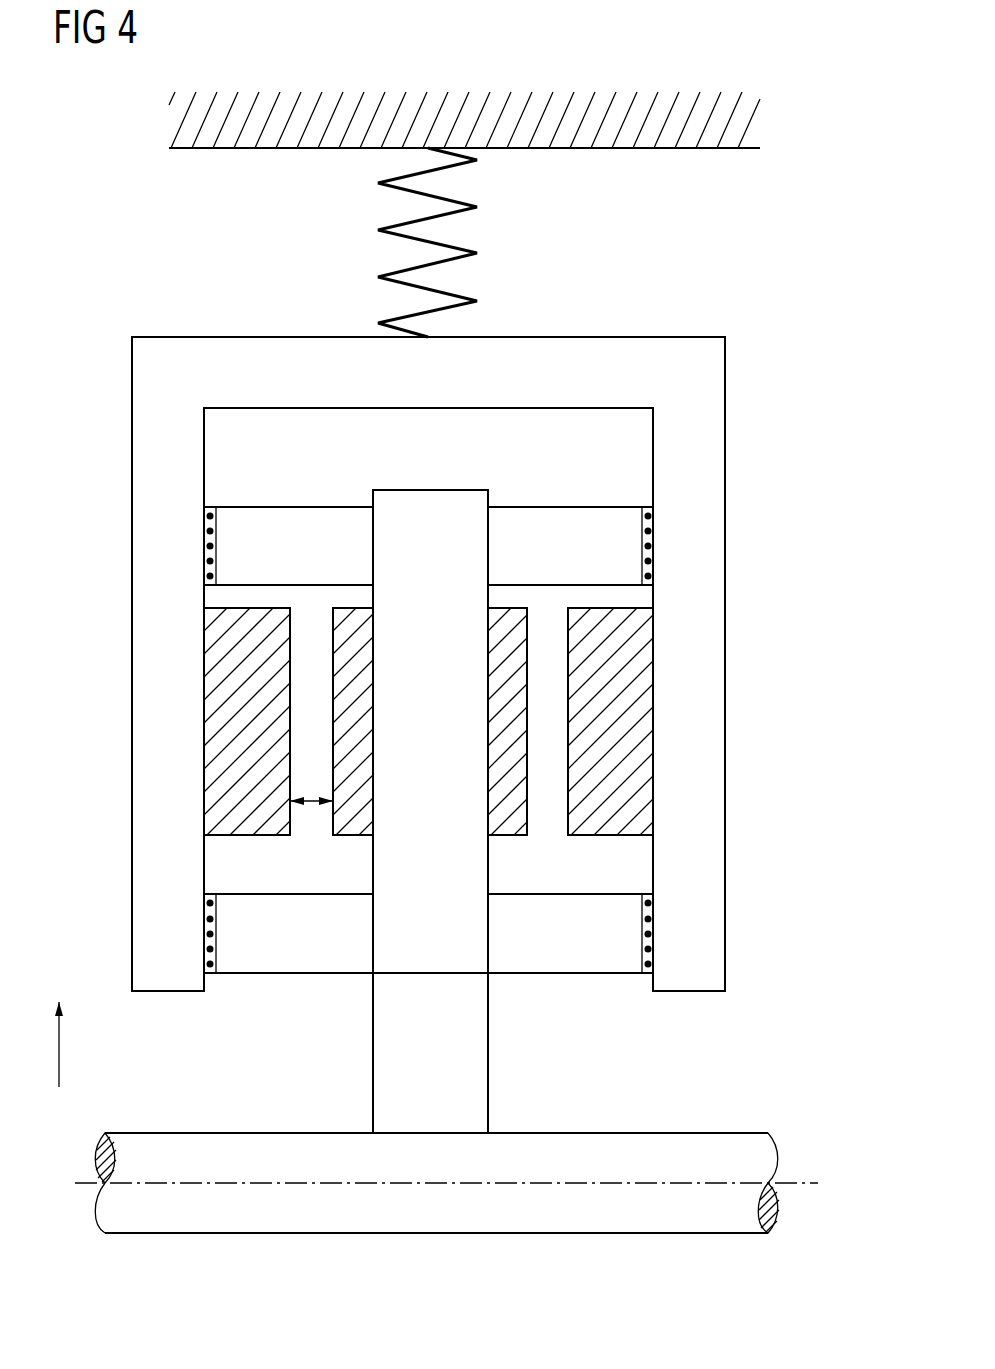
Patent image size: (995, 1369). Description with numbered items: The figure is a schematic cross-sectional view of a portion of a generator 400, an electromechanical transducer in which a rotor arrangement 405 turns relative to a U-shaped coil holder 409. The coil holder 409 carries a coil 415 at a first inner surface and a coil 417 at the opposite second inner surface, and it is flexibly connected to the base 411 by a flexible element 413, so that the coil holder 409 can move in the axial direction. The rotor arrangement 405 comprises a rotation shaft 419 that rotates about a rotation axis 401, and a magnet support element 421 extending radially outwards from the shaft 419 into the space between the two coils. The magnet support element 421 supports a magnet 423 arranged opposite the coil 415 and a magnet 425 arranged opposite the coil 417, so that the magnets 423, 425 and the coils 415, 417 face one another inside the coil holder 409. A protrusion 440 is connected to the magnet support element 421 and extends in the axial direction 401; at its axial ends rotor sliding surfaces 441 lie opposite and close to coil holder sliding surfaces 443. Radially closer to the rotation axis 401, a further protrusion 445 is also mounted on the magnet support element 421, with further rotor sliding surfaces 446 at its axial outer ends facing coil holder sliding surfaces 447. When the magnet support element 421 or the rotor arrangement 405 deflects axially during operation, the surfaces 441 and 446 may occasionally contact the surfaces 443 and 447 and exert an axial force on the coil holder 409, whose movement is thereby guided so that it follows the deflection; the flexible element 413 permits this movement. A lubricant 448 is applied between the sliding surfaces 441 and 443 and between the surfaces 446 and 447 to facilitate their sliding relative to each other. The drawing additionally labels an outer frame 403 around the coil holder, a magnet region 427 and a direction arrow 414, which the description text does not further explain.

The generator 400 is at (103, 326).
The rotation axis 401 is at (805, 1185).
The housing 403 is at (488, 636).
The rotor arrangement 405 is at (307, 1052).
The coil holder 409 is at (536, 348).
The fixed support 411 is at (263, 150).
The flexible element 413 is at (463, 237).
The direction of movement 414 is at (60, 1052).
The coil 415 is at (243, 820).
The coil 417 is at (612, 822).
The rotation shaft 419 is at (556, 1224).
The magnet support element 421 is at (477, 1043).
The magnet 423 is at (355, 820).
The magnet 425 is at (520, 822).
The magnet arrangement 427 is at (428, 712).
The protrusion 440 is at (308, 518).
The rotor sliding surfaces 441 is at (218, 560).
The coil holder sliding surfaces 443 is at (205, 550).
The further protrusion 445 is at (322, 965).
The further rotor sliding surfaces 446 is at (218, 945).
The coil holder sliding surfaces 447 is at (207, 935).
The lubricant 448 is at (213, 493).